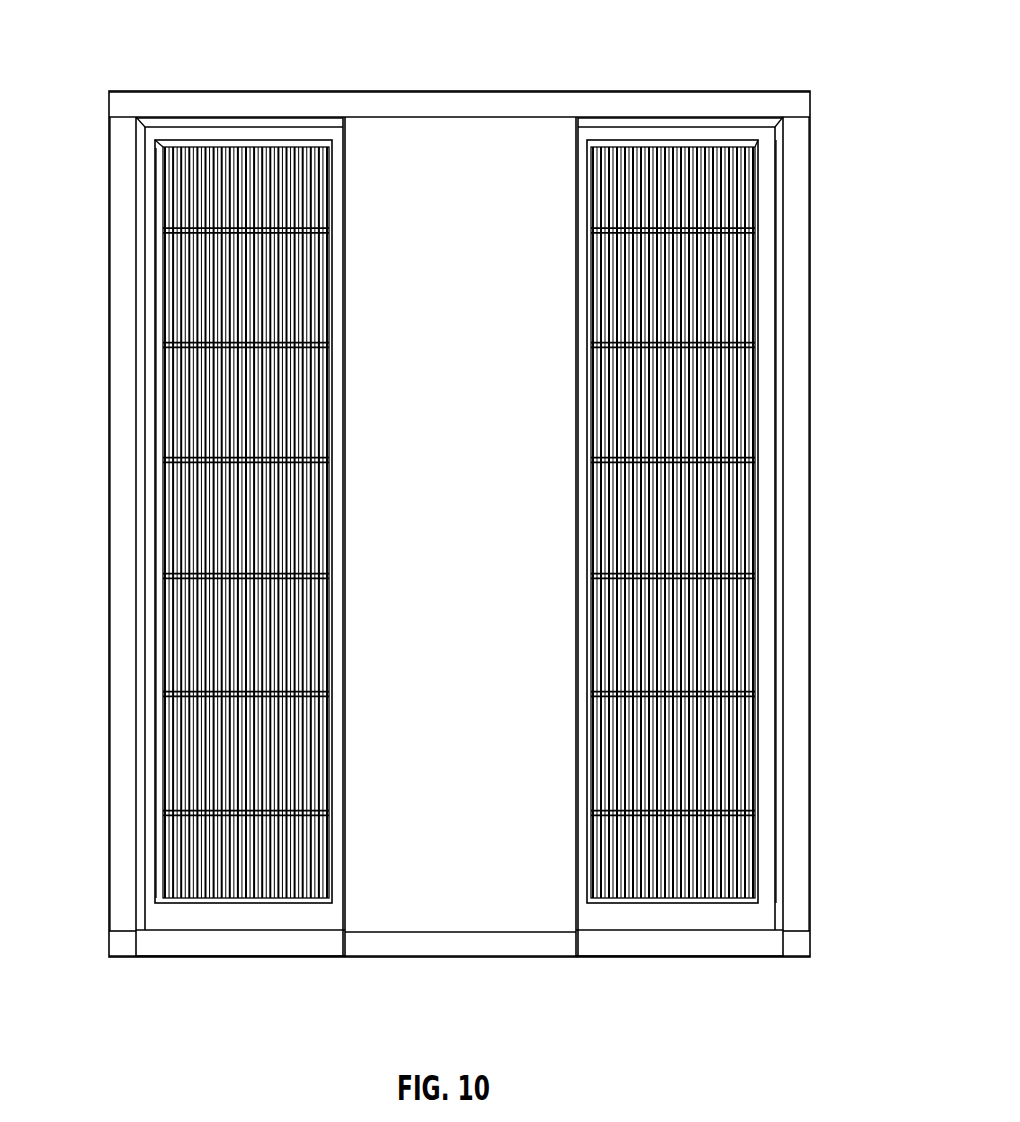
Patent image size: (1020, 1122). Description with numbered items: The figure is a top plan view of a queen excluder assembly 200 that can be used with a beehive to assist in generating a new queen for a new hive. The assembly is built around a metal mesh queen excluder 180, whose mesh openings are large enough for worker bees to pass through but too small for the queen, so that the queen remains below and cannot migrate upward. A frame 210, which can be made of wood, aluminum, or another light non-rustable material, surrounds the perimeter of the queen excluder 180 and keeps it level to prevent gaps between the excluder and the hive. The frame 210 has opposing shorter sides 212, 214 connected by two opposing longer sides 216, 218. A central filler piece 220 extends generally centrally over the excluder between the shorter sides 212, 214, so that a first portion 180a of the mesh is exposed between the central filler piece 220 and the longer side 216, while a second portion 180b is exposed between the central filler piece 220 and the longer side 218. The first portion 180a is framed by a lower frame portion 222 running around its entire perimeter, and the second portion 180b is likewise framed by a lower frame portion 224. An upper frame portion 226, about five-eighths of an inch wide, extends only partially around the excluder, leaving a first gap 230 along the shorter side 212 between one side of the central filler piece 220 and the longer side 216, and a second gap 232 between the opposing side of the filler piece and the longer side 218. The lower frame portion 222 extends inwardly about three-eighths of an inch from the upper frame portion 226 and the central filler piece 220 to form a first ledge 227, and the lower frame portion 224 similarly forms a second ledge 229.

The queen excluder assembly 200 is at (678, 44).
The frame 210 is at (130, 703).
The shorter side 212 is at (203, 939).
The shorter side 214 is at (283, 100).
The longer side 216 is at (130, 532).
The longer side 218 is at (796, 440).
The central filler piece 220 is at (443, 158).
The lower frame portion 222 is at (206, 132).
The lower frame portion 224 is at (757, 650).
The upper frame portion 226 is at (795, 690).
The first ledge 227 is at (150, 612).
The second ledge 229 is at (770, 318).
The first gap 230 is at (293, 912).
The second gap 232 is at (696, 912).
The queen excluder 180 is at (200, 340).
The first portion 180a is at (205, 235).
The second portion 180b is at (735, 230).